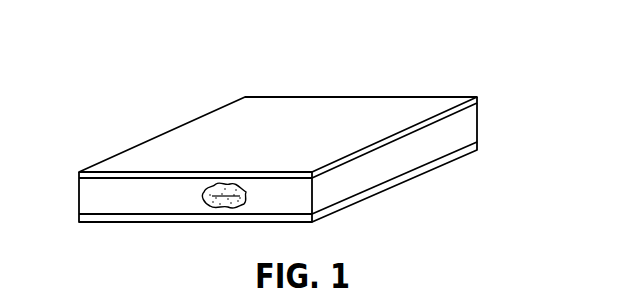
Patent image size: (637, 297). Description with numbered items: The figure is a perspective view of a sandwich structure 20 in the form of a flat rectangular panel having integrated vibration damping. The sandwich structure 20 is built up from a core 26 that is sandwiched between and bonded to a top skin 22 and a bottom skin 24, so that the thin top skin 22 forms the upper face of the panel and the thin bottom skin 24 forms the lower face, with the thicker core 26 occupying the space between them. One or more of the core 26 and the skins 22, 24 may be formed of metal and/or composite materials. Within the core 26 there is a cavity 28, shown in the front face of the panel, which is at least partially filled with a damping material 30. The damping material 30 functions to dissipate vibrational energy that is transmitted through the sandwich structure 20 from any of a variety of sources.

The sandwich structure 20 is at (125, 123).
The top skin 22 is at (422, 107).
The bottom skin 24 is at (410, 175).
The core 26 is at (457, 125).
The cavity 28 is at (223, 184).
The damping material 30 is at (222, 210).